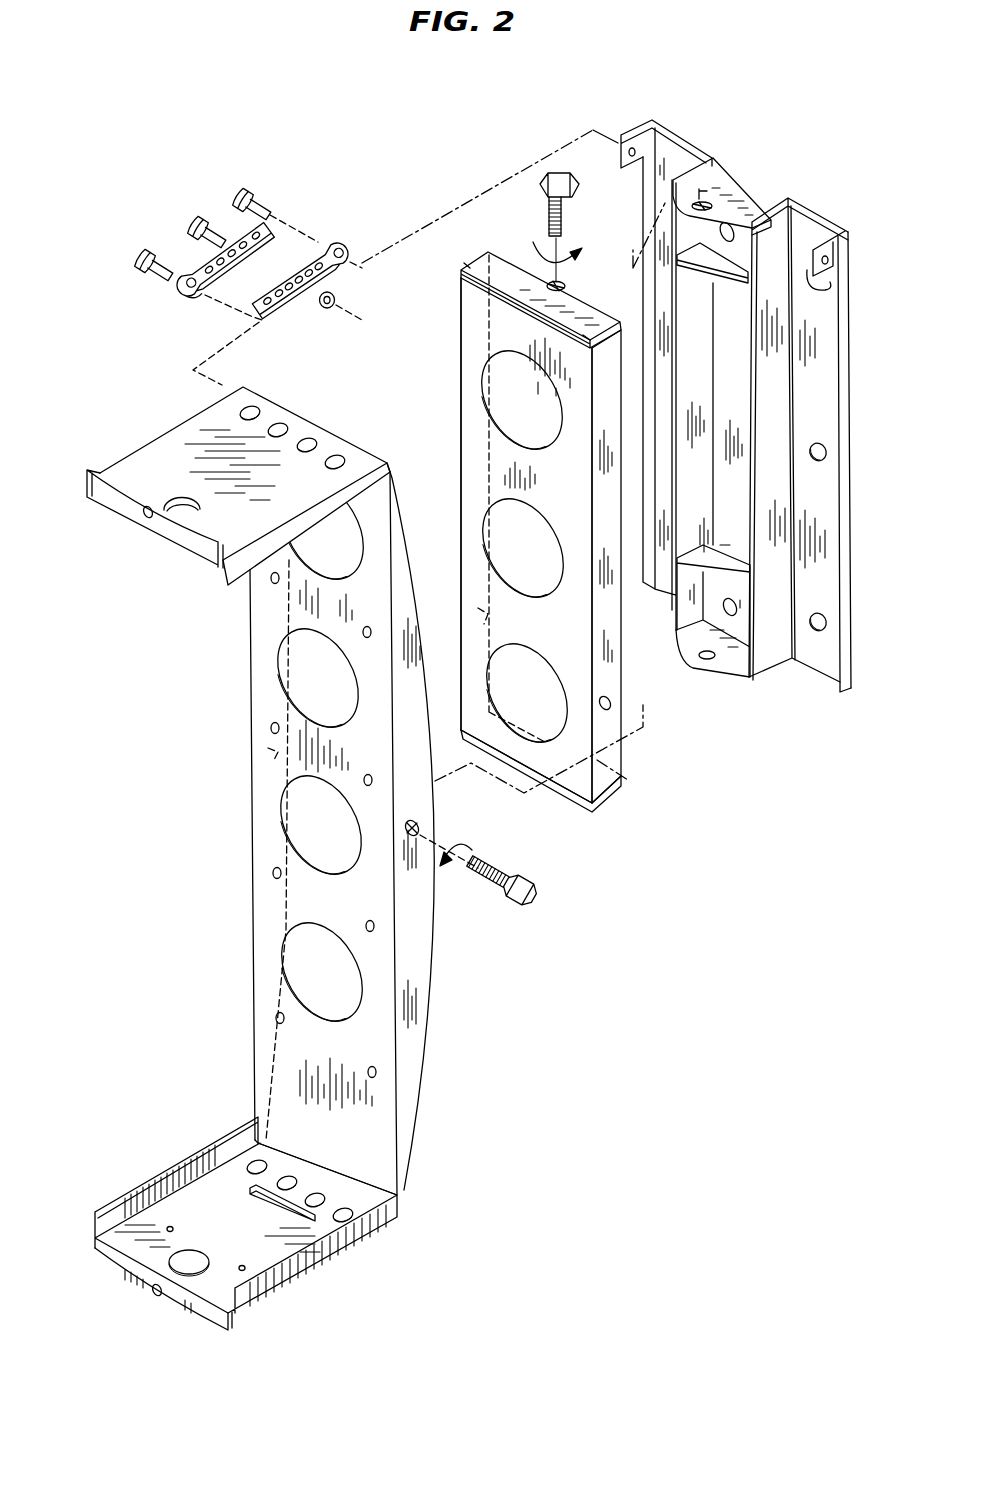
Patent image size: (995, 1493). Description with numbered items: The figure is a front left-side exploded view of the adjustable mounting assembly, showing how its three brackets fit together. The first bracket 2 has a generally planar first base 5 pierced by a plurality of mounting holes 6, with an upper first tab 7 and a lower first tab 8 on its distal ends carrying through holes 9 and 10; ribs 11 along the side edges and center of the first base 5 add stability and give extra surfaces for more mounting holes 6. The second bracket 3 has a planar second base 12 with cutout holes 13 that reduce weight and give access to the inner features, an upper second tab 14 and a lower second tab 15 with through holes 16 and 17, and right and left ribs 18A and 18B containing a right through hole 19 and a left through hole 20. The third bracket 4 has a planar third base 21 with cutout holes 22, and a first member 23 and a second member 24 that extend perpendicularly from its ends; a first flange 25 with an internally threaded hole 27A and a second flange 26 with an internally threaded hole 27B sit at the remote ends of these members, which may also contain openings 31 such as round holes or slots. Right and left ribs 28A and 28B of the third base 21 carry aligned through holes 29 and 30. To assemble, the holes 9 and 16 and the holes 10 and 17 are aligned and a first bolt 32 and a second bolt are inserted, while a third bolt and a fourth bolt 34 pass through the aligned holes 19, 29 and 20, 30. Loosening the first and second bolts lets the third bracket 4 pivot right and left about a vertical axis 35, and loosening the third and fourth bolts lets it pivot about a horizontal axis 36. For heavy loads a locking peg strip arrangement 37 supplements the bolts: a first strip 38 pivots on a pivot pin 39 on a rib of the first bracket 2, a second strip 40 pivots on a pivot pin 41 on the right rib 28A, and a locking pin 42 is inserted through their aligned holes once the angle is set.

The first bracket 2 is at (761, 438).
The second bracket 3 is at (524, 531).
The third bracket 4 is at (272, 872).
The first base 5 is at (813, 445).
The mounting holes 6 is at (826, 452).
The upper first tab 7 is at (732, 182).
The lower first tab 8 is at (704, 634).
The through hole 9 is at (706, 206).
The through hole 10 is at (700, 657).
The ribs 11 is at (849, 326).
The second base 12 is at (537, 533).
The cutout holes 13 is at (532, 598).
The upper second tab 14 is at (541, 278).
The lower second tab 15 is at (580, 797).
The through hole 16 is at (565, 284).
The through hole 17 is at (540, 740).
The right rib 18A is at (478, 450).
The left rib 18B is at (608, 603).
The right through hole 19 is at (482, 616).
The left through hole 20 is at (606, 697).
The third base 21 is at (298, 1068).
The cutout holes 22 is at (296, 848).
The first member 23 is at (245, 474).
The second member 24 is at (233, 1234).
The first flange 25 is at (132, 520).
The second flange 26 is at (163, 1314).
The hole 27A is at (143, 517).
The hole 27B is at (153, 1297).
The right rib 28A is at (291, 831).
The left rib 28B is at (436, 826).
The through hole 29 is at (266, 752).
The through hole 30 is at (414, 836).
The openings 31 is at (282, 425).
The first bolt 32 is at (580, 184).
The fourth bolt 34 is at (538, 885).
The vertical axis 35 is at (535, 242).
The horizontal axis 36 is at (472, 850).
The locking peg strip arrangement 37 is at (224, 259).
The first strip 38 is at (328, 243).
The pivot pin 39 is at (240, 190).
The second strip 40 is at (184, 276).
The pivot pin 41 is at (138, 265).
The locking pin 42 is at (196, 218).